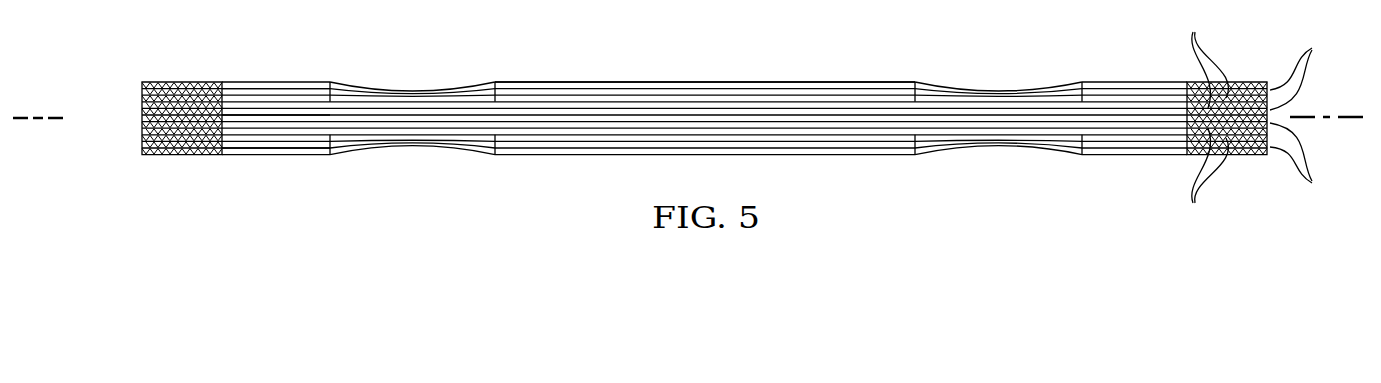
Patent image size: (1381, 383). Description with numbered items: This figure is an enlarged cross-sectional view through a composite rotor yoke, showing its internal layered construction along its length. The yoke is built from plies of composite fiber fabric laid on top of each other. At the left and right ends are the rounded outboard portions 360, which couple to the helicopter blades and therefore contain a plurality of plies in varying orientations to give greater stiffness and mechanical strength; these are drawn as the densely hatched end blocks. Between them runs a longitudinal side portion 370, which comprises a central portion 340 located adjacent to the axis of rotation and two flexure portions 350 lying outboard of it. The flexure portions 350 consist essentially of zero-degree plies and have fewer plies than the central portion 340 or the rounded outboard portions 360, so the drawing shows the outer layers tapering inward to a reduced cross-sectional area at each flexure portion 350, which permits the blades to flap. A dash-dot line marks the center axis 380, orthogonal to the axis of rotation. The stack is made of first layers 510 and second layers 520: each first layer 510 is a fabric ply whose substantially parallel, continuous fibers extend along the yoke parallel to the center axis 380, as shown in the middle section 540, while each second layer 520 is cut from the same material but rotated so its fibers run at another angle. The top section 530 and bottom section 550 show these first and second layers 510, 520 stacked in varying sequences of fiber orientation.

The central portion 340 is at (769, 82).
The flexure portions 350 is at (412, 86).
The rounded outboard portions 360 is at (180, 82).
The longitudinal side portions 370 is at (560, 82).
The center axis 380 is at (1326, 116).
The first layers 510 is at (1202, 119).
The second layers 520 is at (1313, 117).
The top section 530 is at (138, 80).
The middle section 540 is at (138, 106).
The bottom section 550 is at (138, 134).